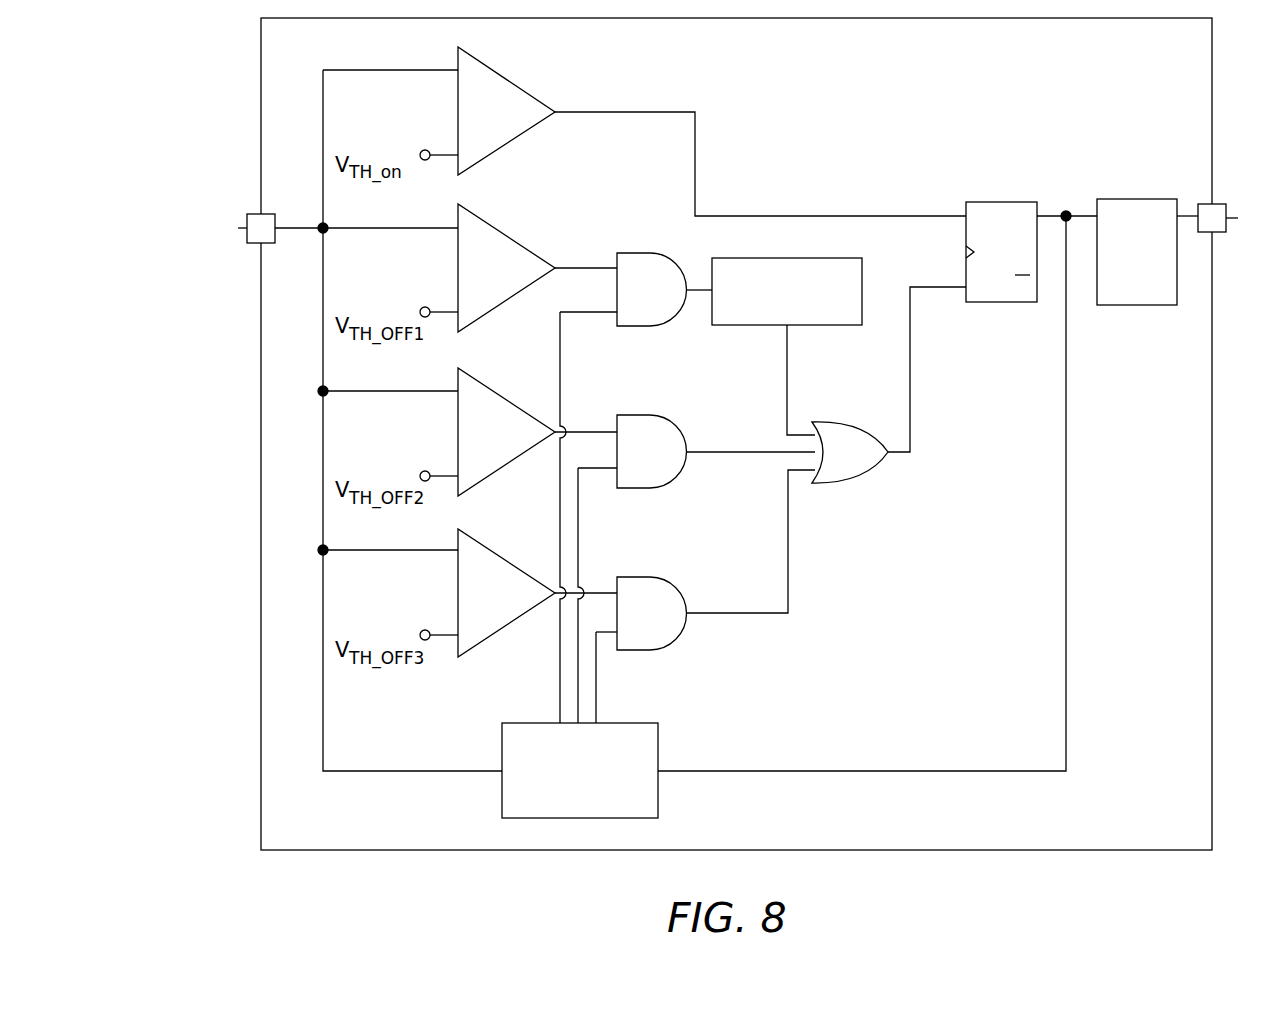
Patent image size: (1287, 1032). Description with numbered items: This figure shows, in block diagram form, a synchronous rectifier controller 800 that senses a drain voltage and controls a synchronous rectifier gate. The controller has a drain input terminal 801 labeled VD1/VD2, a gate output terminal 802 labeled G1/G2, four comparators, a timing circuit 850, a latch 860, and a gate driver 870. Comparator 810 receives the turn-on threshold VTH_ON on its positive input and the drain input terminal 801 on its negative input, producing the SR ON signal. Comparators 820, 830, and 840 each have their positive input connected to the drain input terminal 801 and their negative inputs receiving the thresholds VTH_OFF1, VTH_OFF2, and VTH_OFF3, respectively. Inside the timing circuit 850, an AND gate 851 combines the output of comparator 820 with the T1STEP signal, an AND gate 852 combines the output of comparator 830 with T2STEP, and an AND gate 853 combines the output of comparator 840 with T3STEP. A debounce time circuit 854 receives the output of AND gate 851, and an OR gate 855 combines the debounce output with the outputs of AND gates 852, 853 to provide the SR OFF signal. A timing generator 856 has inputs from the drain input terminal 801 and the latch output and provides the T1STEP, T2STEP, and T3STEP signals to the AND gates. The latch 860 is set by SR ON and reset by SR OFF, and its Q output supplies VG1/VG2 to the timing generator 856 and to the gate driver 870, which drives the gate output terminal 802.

The synchronous rectifier controller 800 is at (152, 65).
The drain input terminal 801 is at (247, 215).
The gate output terminal 802 is at (1222, 205).
The comparator 810 is at (507, 78).
The comparator 820 is at (478, 213).
The comparator 830 is at (478, 376).
The comparator 840 is at (478, 536).
The timing circuit 850 is at (813, 151).
The AND gate 851 is at (643, 253).
The AND gate 852 is at (643, 415).
The AND gate 853 is at (643, 577).
The debounce time circuit 854 is at (770, 258).
The OR gate 855 is at (868, 474).
The timing generator 856 is at (658, 752).
The latch 860 is at (977, 202).
The gate driver 870 is at (1136, 199).